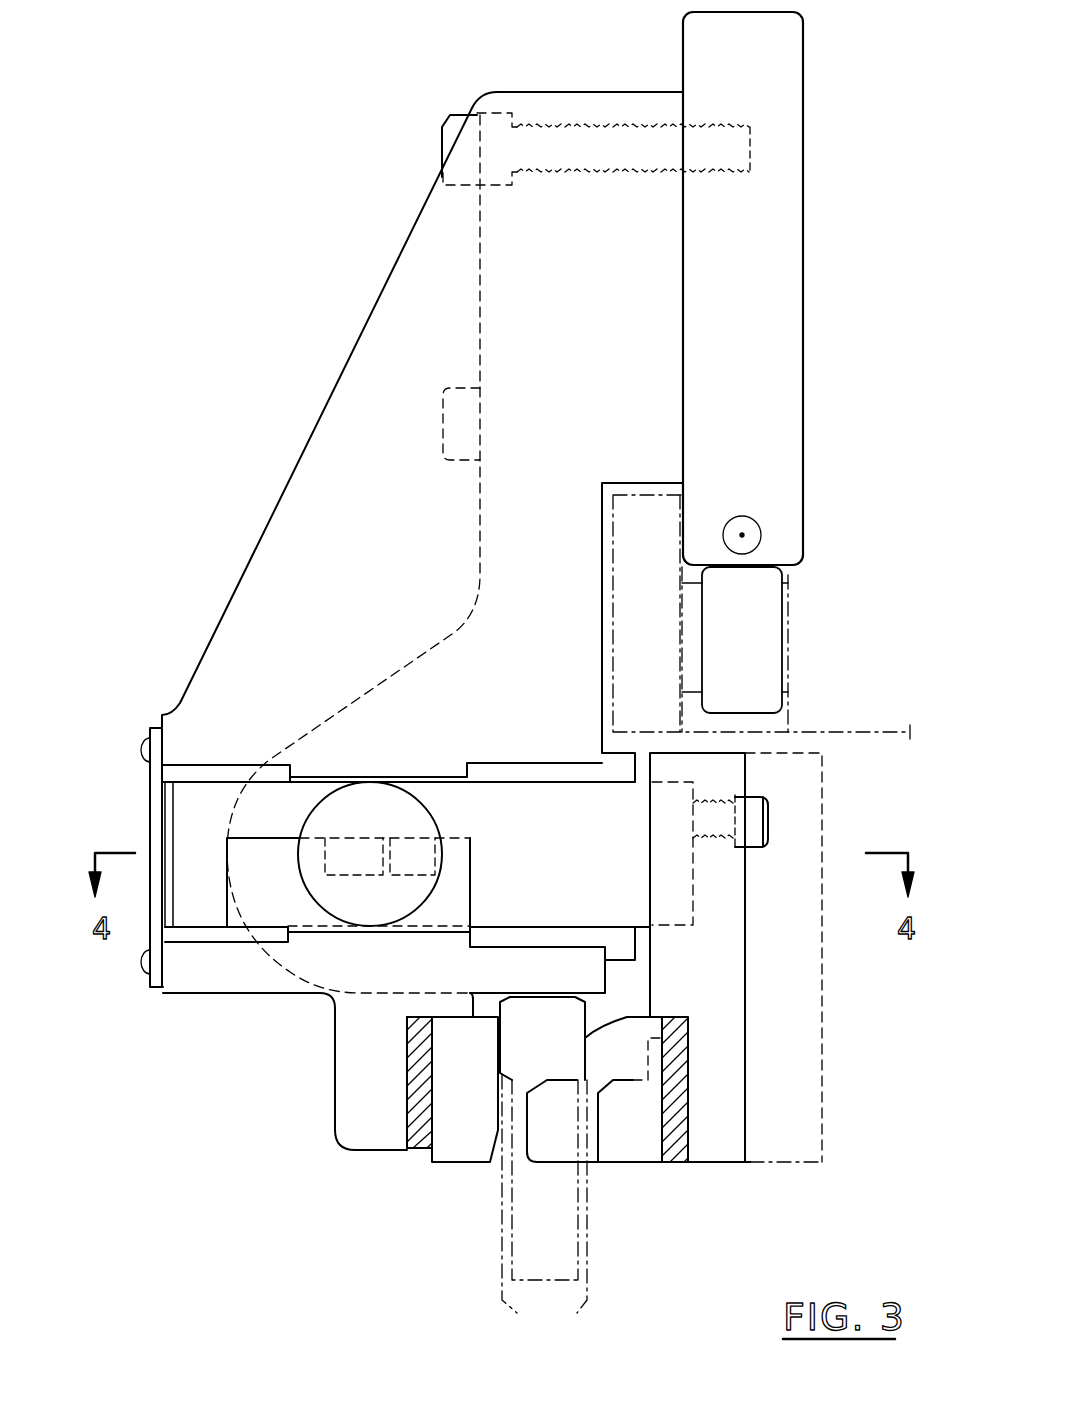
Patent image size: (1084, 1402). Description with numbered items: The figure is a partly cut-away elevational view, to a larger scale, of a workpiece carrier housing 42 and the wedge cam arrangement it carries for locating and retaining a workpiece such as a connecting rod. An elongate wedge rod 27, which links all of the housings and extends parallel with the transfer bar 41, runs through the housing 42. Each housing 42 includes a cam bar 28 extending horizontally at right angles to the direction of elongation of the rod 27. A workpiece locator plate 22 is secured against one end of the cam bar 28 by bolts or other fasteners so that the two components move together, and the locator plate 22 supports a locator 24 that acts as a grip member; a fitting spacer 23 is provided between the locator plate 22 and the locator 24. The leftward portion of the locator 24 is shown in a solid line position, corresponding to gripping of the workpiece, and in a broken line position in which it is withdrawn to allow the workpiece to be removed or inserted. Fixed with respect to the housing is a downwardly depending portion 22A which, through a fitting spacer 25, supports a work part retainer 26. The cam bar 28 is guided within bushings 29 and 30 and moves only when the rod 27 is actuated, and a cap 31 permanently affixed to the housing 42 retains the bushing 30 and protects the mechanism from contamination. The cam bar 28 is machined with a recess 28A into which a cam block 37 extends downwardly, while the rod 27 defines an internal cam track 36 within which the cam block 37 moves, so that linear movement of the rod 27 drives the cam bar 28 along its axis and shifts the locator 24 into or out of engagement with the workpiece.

The workpiece locator plate 22 is at (740, 1073).
The downwardly depending portion 22A is at (345, 1116).
The fitting spacer 23 is at (680, 1140).
The locator element 24 is at (625, 1153).
The fitting spacer 25 is at (412, 1048).
The work part retainer 26 is at (457, 1148).
The wedge rod 27 is at (357, 790).
The cam bar 28 is at (677, 793).
The recess 28A is at (467, 905).
The bushing 29 is at (622, 760).
The bushing 30 is at (237, 770).
The cap 31 is at (155, 795).
The cam track 36 is at (420, 848).
The cam block 37 is at (360, 845).
The transfer bar 41 is at (787, 83).
The workpiece carrier housing 42 is at (553, 100).